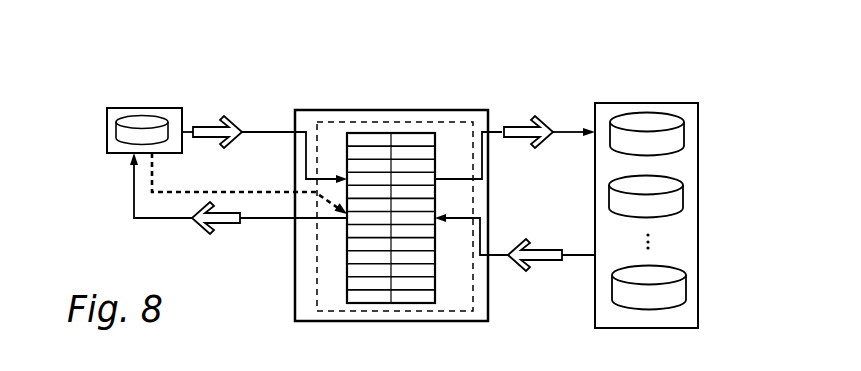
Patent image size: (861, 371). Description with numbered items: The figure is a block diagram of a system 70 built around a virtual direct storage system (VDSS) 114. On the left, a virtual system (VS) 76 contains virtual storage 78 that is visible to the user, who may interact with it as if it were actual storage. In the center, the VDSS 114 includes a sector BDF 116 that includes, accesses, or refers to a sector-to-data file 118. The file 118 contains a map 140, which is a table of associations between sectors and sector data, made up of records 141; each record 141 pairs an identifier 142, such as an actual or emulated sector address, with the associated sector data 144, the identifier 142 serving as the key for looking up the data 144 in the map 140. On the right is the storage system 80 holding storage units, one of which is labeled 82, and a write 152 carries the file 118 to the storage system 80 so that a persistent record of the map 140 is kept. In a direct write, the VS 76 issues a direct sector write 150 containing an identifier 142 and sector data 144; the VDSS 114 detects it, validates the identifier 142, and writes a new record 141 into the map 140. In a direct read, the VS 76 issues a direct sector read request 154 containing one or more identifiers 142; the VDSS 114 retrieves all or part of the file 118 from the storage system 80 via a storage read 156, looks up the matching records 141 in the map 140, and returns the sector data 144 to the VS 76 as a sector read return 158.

The system 70 is at (126, 50).
The virtual direct storage system 114 is at (227, 50).
The virtual system 76 is at (107, 118).
The virtual storage 78 is at (116, 131).
The direct sector write 150 is at (212, 125).
The sector BDF 116 is at (317, 283).
The sector-to-data file 118 is at (360, 133).
The map 140 is at (437, 138).
The record 141 is at (360, 142).
The identifier 142 is at (372, 138).
The sector data 144 is at (412, 138).
The data output arrow 152 is at (525, 125).
The storage read 156 is at (540, 262).
The sector read return 158 is at (200, 228).
The direct sector read request 154 is at (152, 181).
The storage system 80 is at (698, 137).
The storage unit 82 is at (665, 265).